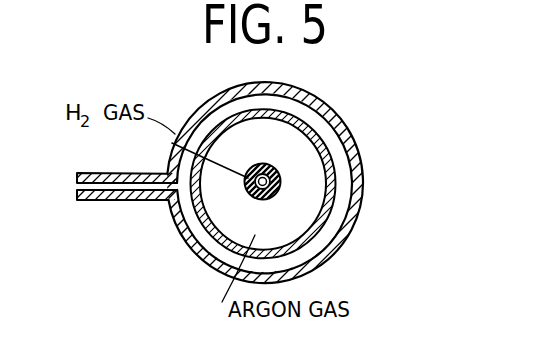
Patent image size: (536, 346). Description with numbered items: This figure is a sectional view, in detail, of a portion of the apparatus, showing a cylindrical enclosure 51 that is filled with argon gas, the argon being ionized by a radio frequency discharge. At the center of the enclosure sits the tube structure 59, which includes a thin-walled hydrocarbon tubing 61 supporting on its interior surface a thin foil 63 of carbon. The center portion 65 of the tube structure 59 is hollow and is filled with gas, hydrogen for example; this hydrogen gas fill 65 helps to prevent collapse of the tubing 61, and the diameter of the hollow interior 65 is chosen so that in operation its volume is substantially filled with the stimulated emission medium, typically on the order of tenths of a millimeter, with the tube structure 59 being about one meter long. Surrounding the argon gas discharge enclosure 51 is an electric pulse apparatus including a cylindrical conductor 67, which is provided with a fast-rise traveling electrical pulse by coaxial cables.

The cylindrical conductor 67 is at (300, 93).
The cylindrical enclosure 51 is at (343, 132).
The thin-walled hydrocarbon tubing 61 is at (266, 163).
The hollow center portion 65 is at (281, 183).
The foil 63 is at (282, 192).
The tube structure 59 is at (251, 203).